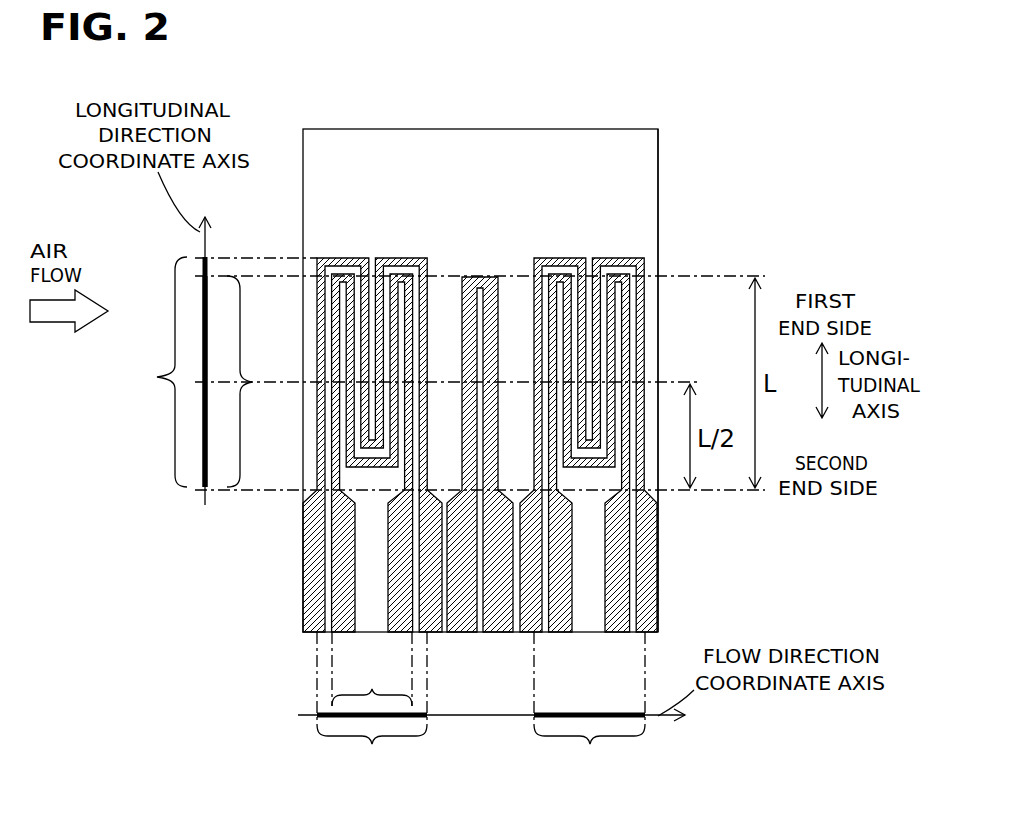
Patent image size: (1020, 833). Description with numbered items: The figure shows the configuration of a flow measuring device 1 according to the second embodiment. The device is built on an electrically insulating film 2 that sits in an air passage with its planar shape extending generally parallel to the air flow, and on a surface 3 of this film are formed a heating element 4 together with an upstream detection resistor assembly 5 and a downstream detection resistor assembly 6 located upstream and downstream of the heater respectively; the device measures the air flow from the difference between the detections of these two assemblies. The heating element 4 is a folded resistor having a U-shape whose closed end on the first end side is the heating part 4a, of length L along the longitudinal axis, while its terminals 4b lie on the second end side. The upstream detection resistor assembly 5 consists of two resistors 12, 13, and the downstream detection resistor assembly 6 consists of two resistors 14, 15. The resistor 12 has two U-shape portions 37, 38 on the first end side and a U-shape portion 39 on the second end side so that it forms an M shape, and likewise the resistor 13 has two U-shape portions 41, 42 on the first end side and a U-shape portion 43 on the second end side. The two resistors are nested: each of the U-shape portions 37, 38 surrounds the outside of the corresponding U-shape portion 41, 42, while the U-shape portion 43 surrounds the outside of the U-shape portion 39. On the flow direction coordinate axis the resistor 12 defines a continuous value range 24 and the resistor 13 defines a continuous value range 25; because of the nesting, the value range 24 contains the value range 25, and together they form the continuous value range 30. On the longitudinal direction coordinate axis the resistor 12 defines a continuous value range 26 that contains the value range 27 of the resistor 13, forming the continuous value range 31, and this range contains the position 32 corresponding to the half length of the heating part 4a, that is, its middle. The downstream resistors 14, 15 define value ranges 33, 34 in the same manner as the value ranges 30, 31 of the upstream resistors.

The flow measuring device 1 is at (713, 95).
The electrically insulating film 2 is at (658, 147).
The surface 3 is at (645, 194).
The heating element 4 is at (501, 373).
The heating part 4a is at (486, 477).
The terminals 4b is at (498, 634).
The upstream detection resistor assembly 5 is at (377, 341).
The downstream detection resistor assembly 6 is at (626, 425).
The resistor 12 is at (378, 362).
The resistor 13 is at (356, 341).
The resistor 14 is at (637, 462).
The resistor 15 is at (652, 500).
The continuous value range 24 is at (372, 749).
The continuous value range 25 is at (372, 676).
The continuous value range 26 is at (108, 372).
The continuous value range 27 is at (250, 380).
The continuous value range 30 is at (372, 749).
The continuous value range 31 is at (108, 372).
The position 32 is at (208, 383).
The value range 33 is at (589, 749).
The value range 34 is at (156, 380).
The U-shape portion 37 is at (340, 341).
The U-shape portion 38 is at (345, 400).
The U-shape portion 39 is at (369, 444).
The U-shape portion 41 is at (329, 341).
The U-shape portion 42 is at (345, 426).
The U-shape portion 43 is at (386, 462).